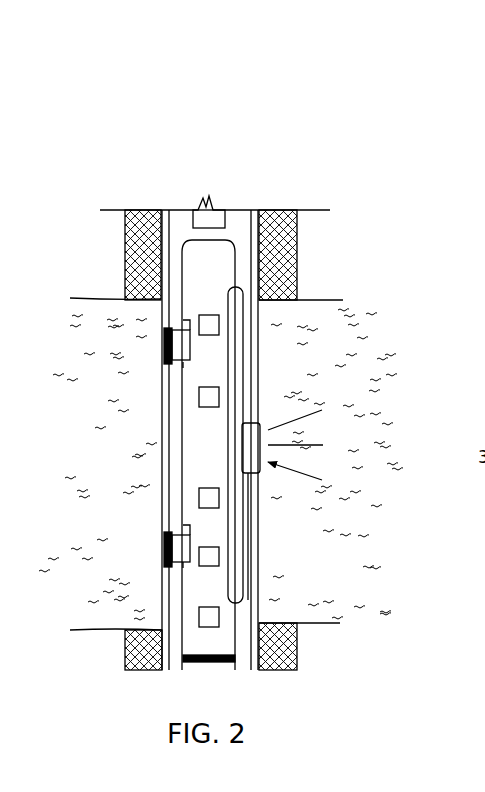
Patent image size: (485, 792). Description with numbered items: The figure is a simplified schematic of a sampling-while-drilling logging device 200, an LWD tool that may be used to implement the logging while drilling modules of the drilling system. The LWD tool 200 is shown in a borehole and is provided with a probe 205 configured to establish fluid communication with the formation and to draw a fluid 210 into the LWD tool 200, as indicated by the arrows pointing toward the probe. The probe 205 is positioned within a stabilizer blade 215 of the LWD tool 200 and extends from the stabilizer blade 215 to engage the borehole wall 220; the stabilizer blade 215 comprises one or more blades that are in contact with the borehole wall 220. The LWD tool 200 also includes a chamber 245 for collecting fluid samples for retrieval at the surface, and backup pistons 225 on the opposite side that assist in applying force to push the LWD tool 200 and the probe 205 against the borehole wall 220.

The sampling-while-drilling logging device 200 is at (113, 146).
The probe 205 is at (248, 444).
The fluid 210 is at (362, 370).
The stabilizer blade 215 is at (240, 356).
The borehole wall 220 is at (257, 266).
The backup pistons 225 is at (162, 345).
The chamber 245 is at (208, 618).